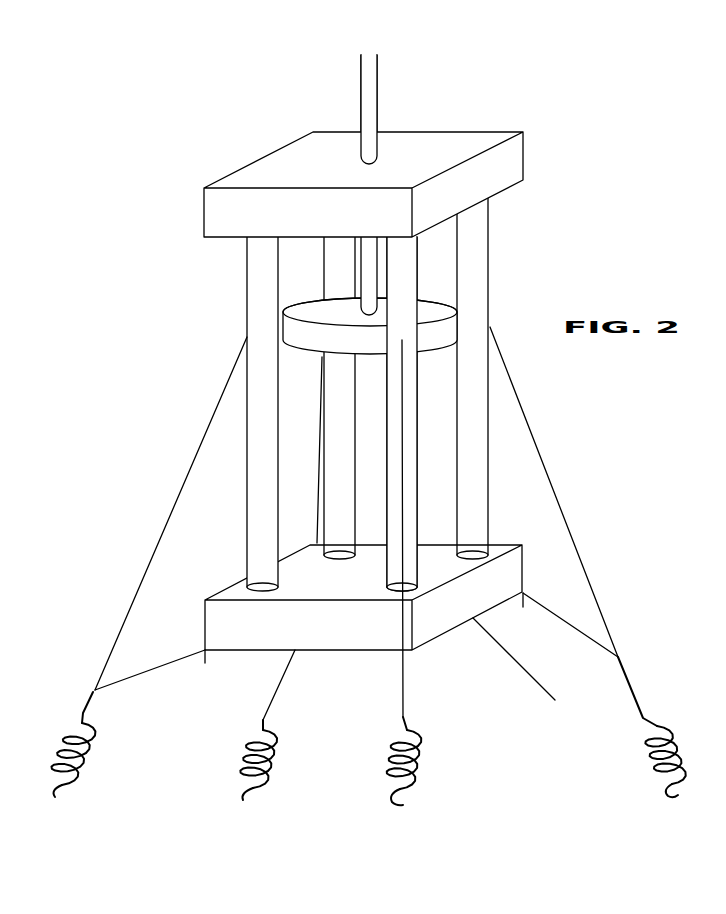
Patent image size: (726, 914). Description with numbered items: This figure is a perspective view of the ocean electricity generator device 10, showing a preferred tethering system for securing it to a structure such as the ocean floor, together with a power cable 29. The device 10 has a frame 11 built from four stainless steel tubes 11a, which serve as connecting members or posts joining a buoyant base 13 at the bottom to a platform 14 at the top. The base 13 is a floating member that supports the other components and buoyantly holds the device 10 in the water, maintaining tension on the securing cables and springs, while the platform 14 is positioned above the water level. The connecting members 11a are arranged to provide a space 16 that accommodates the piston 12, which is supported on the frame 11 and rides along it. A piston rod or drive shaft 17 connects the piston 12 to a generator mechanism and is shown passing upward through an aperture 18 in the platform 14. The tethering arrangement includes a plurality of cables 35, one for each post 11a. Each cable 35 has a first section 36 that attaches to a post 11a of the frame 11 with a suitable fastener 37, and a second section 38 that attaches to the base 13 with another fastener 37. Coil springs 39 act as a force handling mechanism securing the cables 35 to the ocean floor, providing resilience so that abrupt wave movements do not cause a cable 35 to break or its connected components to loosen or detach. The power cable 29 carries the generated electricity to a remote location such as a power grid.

The ocean electricity generator device 10 is at (541, 129).
The frame 11 is at (367, 394).
The tubes 11a is at (338, 260).
The piston 12 is at (312, 308).
The base 13 is at (440, 610).
The platform 14 is at (458, 142).
The space 16 is at (435, 283).
The drive shaft 17 is at (367, 103).
The aperture 18 is at (358, 163).
The power cable 29 is at (517, 667).
The cables 35 is at (93, 686).
The first section 36 is at (183, 485).
The fastener 37 is at (247, 337).
The second section 38 is at (155, 670).
The coil springs 39 is at (83, 762).